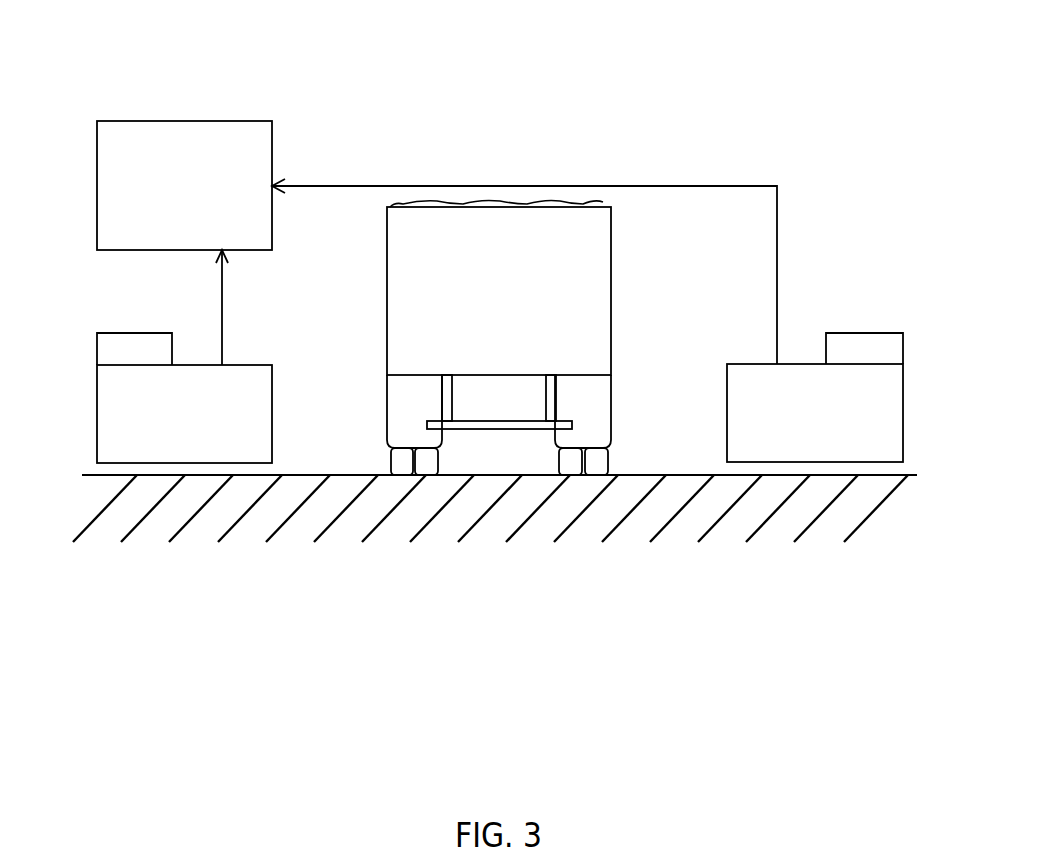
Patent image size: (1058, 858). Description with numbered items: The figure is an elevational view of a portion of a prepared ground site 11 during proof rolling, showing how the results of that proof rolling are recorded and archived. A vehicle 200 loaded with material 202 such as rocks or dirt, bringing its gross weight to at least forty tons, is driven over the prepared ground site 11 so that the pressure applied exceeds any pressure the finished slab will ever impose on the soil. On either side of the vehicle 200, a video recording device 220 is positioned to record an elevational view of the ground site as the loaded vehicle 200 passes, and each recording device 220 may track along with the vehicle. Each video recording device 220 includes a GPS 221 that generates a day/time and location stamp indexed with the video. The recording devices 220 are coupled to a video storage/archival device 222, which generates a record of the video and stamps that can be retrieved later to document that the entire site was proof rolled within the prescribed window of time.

The prepared ground site 11 is at (921, 476).
The vehicle 200 is at (600, 293).
The material 202 is at (600, 203).
The video recording device 220 is at (97, 385).
The GPS 221 is at (107, 333).
The video storage/archival device 222 is at (243, 121).